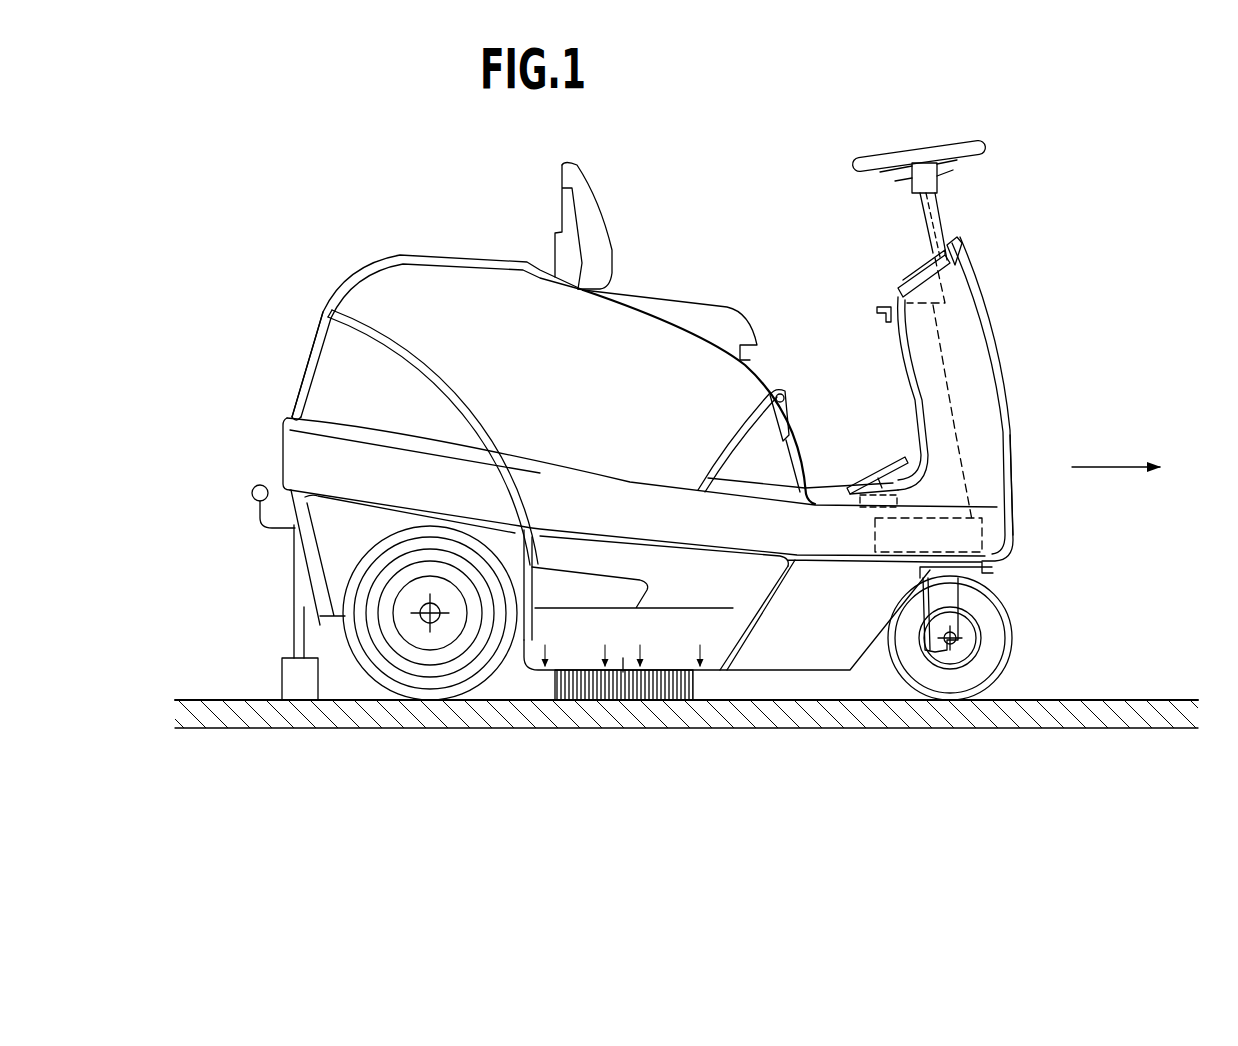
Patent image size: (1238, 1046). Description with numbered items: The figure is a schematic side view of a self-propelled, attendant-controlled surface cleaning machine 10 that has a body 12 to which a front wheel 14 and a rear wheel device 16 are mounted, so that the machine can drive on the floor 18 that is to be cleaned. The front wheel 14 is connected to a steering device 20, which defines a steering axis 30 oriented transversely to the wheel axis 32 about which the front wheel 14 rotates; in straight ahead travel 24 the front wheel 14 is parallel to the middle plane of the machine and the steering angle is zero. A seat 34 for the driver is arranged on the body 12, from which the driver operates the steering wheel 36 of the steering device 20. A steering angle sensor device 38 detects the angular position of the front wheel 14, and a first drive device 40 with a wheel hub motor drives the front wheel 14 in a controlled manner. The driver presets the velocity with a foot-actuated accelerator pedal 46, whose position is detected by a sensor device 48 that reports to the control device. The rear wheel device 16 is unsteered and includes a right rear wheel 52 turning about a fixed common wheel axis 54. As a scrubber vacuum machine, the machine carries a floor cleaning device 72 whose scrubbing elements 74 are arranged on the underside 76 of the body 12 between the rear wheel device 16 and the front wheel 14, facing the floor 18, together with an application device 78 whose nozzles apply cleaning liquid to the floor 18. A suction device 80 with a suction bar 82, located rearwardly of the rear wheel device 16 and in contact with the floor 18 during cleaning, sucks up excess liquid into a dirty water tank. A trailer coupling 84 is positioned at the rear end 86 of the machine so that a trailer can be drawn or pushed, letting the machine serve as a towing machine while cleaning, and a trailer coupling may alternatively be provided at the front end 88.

The surface cleaning machine 10 is at (313, 272).
The body 12 is at (431, 292).
The front wheel 14 is at (915, 657).
The rear wheel device 16 is at (487, 665).
The floor 18 is at (1140, 700).
The steering device 20 is at (946, 206).
The straight ahead travel 24 is at (1105, 467).
The steering axis 30 is at (920, 208).
The wheel axis 32 is at (950, 645).
The seat 34 is at (590, 195).
The steering wheel 36 is at (962, 142).
The steering angle sensor device 38 is at (970, 537).
The first drive device 40 is at (985, 648).
The accelerator pedal 46 is at (890, 460).
The sensor device 48 is at (848, 490).
The right rear wheel 52 is at (393, 655).
The wheel axis 54 is at (430, 613).
The floor cleaning device 72 is at (610, 688).
The scrubbing elements 74 is at (655, 683).
The underside 76 is at (766, 672).
The application device 78 is at (700, 632).
The suction device 80 is at (294, 627).
The suction bar 82 is at (300, 683).
The trailer coupling 84 is at (250, 508).
The rear end 86 is at (285, 455).
The front end 88 is at (1014, 512).